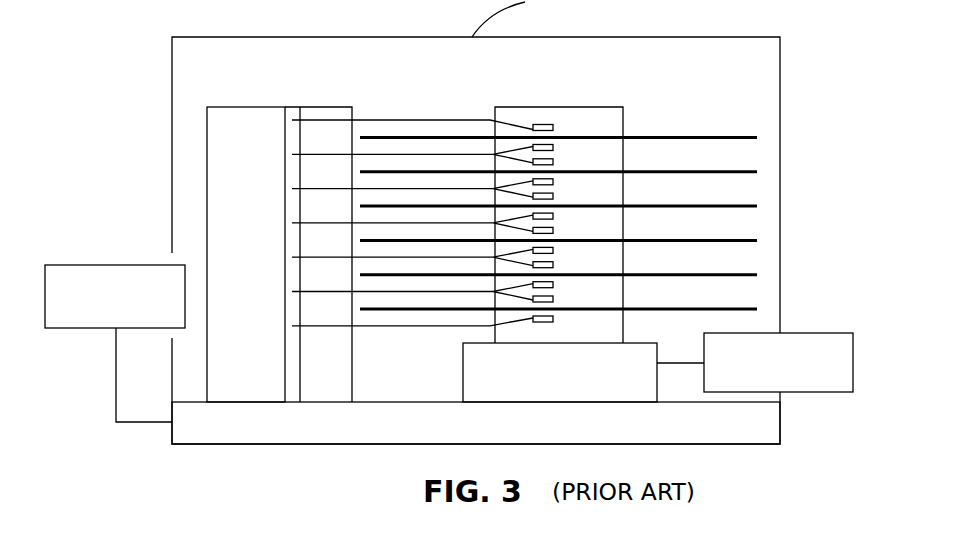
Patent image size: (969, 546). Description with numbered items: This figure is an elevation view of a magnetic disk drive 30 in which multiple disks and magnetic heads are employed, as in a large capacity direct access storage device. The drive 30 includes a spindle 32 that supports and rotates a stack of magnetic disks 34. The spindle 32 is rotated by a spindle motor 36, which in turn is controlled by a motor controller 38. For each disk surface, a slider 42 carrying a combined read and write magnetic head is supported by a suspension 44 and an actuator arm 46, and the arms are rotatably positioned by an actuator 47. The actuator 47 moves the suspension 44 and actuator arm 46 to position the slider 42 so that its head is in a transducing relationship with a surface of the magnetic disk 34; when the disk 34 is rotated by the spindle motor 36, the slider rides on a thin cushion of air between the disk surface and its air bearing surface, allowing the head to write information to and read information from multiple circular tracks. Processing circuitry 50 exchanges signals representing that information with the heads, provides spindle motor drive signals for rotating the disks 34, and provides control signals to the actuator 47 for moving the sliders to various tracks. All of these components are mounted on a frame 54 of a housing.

The magnetic disk drive 30 is at (672, 108).
The spindle 32 is at (615, 107).
The magnetic disk 34 is at (757, 138).
The spindle motor 36 is at (573, 384).
The motor controller 38 is at (810, 392).
The slider 42 is at (553, 150).
The suspension 44 is at (526, 155).
The actuator arm 46 is at (463, 155).
The actuator 47 is at (237, 107).
The processing circuitry 50 is at (88, 265).
The frame 54 is at (222, 444).